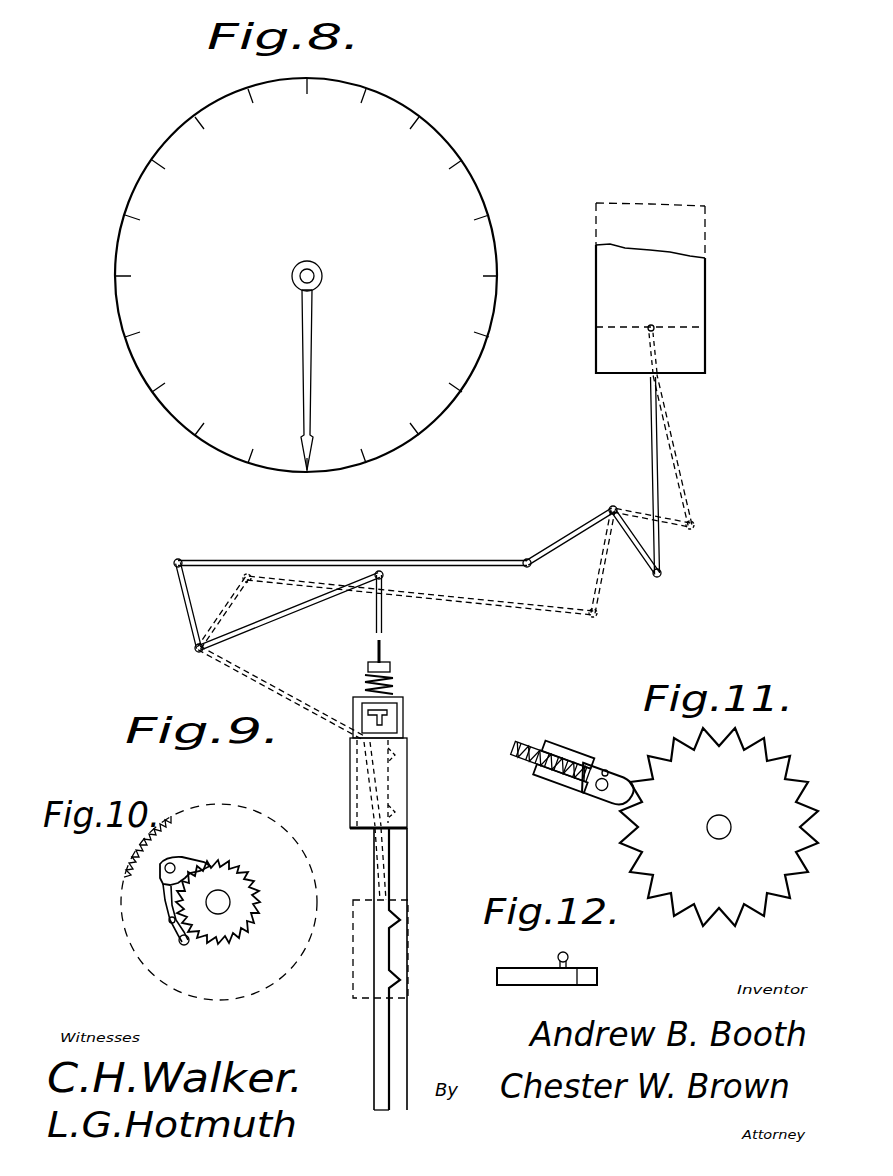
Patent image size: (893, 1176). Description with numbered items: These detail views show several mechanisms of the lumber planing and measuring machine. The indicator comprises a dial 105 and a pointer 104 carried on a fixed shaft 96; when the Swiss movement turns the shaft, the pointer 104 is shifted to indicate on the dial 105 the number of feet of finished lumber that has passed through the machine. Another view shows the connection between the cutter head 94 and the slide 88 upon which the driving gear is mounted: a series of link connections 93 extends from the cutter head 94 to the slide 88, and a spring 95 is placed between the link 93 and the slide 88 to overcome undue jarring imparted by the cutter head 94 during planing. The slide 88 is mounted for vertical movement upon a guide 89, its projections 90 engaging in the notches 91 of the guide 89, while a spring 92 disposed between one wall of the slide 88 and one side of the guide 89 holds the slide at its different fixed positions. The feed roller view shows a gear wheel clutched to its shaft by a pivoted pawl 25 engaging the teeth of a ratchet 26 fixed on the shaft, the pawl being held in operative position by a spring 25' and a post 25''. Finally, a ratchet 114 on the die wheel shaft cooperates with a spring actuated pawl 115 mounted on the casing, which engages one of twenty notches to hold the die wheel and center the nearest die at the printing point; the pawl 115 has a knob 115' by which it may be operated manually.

In FIG. 8, the dial 105 is at (215, 345).
In FIG. 8, the fixed shaft 96 is at (309, 272).
In FIG. 8, the pointer 104 is at (310, 361).
In FIG. 8, the cutter head 94 is at (608, 308).
In FIG. 8, the link connections 93 is at (383, 622).
In FIG. 9, the spring 95 is at (393, 683).
In FIG. 9, the slide 88 is at (400, 822).
In FIG. 9, the projections 90 is at (393, 807).
In FIG. 9, the spring 92 is at (355, 793).
In FIG. 9, the guide 89 is at (392, 1017).
In FIG. 9, the notches 91 is at (395, 970).
In FIG. 10, the ratchet 26 is at (235, 873).
In FIG. 10, the pawl 25 is at (185, 862).
In FIG. 10, the spring 25' is at (115, 924).
In FIG. 10, the post 25'' is at (130, 959).
In FIG. 11, the ratchet 114 is at (695, 893).
In FIG. 11, the pawl 115 is at (581, 770).
In FIG. 12, the pawl 115 is at (547, 991).
In FIG. 12, the knob 115' is at (591, 947).